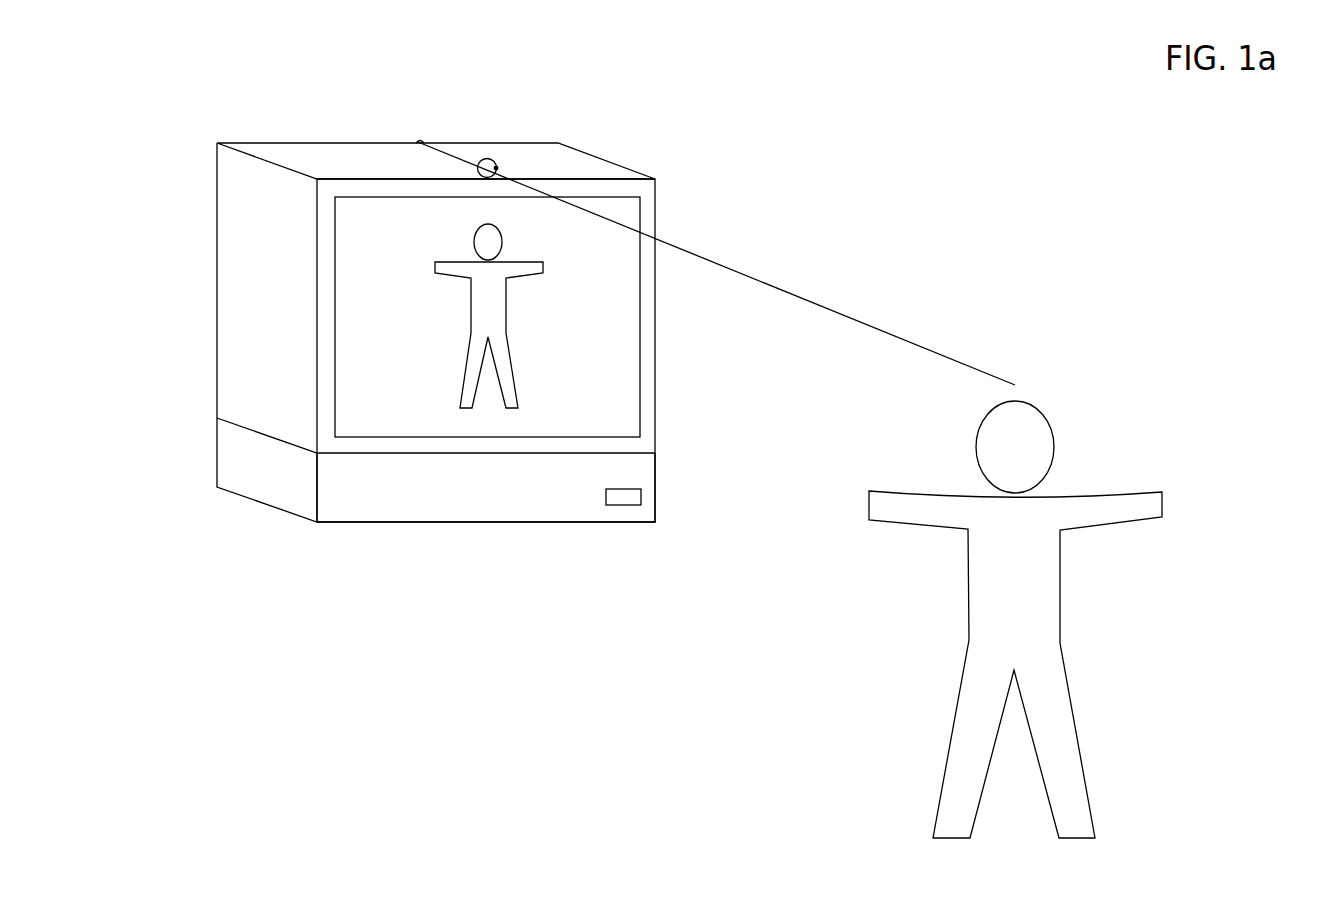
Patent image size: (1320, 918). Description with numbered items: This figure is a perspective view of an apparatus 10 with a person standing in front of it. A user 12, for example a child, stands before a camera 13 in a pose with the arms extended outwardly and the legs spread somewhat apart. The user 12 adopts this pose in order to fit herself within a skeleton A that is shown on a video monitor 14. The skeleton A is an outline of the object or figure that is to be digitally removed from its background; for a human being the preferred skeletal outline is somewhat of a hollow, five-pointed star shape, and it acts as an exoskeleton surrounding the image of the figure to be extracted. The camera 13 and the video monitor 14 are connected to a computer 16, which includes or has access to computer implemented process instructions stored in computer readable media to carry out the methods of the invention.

The apparatus 10 is at (852, 225).
The user 12 is at (1040, 393).
The camera 13 is at (495, 160).
The video monitor 14 is at (252, 326).
The computer 16 is at (267, 487).
The skeleton A is at (521, 277).